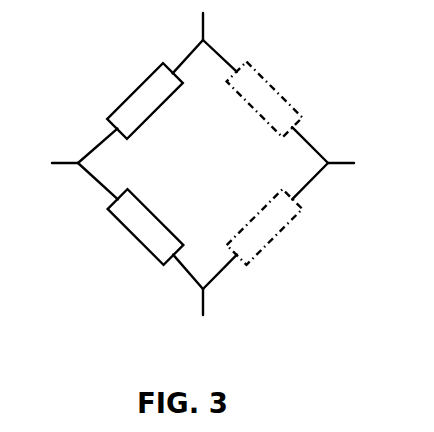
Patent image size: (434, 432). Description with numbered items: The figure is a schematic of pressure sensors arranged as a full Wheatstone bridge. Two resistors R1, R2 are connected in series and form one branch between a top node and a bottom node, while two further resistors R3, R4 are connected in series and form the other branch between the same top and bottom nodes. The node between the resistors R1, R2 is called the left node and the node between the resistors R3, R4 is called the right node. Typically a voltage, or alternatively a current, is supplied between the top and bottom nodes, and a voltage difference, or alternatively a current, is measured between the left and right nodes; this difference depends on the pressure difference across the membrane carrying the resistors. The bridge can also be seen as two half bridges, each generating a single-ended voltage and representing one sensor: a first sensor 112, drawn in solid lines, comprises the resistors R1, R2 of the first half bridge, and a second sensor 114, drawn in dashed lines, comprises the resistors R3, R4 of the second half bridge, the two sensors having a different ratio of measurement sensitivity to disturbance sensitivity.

The first sensor 112 is at (73, 60).
The second sensor 114 is at (230, 55).
The resistor R1 is at (140, 101).
The resistor R2 is at (140, 226).
The resistor R3 is at (265, 101).
The resistor R4 is at (265, 226).